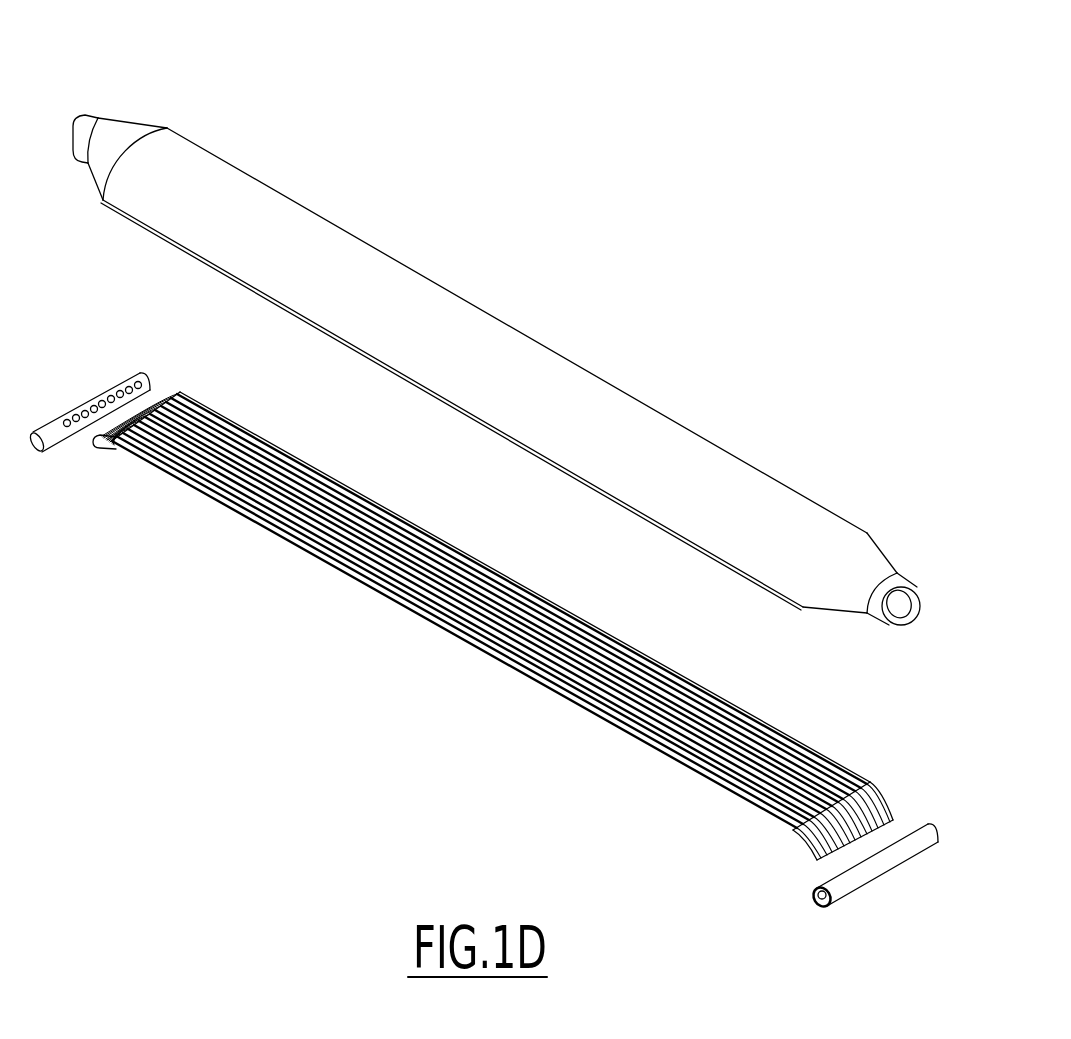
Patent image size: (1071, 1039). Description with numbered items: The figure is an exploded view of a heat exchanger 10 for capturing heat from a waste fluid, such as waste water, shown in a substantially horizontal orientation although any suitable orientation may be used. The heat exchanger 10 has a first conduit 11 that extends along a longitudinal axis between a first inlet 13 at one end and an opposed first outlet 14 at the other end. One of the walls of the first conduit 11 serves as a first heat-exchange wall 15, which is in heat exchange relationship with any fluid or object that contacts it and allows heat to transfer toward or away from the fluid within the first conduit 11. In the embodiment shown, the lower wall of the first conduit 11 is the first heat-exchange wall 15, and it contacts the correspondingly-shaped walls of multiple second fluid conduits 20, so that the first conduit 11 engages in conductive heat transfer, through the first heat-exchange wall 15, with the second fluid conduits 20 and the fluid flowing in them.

The heat exchanger 10 is at (512, 373).
The first conduit 11 is at (190, 145).
The first inlet 13 is at (78, 108).
The first outlet 14 is at (913, 627).
The first heat-exchange wall 15 is at (753, 580).
The second fluid conduits 20 is at (285, 523).